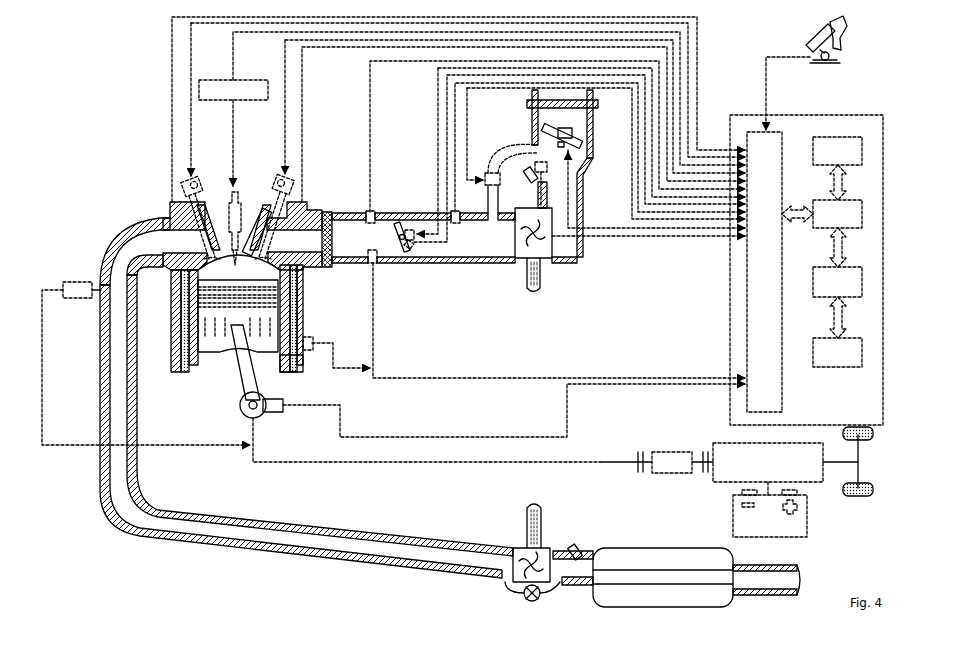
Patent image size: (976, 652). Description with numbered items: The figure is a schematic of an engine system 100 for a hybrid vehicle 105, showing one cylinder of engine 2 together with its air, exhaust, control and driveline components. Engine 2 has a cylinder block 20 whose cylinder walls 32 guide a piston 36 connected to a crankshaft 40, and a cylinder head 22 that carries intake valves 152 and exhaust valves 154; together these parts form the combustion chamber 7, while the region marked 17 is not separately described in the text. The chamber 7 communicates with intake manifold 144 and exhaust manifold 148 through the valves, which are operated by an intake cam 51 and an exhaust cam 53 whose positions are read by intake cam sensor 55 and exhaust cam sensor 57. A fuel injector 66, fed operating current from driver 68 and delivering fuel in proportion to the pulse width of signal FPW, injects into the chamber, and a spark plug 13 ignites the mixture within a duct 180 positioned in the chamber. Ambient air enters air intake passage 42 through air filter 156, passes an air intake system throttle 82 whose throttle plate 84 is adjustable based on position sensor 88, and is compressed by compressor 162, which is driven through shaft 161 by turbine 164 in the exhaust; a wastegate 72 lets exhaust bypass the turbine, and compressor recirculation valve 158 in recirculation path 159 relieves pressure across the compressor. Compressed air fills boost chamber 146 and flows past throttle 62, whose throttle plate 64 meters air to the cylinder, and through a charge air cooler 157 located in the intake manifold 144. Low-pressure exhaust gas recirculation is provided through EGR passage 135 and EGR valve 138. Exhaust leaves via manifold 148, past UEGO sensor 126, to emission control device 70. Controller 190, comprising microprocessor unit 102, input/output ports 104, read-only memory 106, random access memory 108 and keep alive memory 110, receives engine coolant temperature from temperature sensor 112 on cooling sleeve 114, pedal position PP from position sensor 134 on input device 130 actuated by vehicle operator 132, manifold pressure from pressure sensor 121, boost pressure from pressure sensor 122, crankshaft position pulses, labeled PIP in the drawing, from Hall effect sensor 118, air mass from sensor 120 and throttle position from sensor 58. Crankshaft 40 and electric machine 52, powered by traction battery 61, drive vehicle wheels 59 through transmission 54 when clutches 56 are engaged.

The engine system 100 is at (70, 54).
The engine 2 is at (120, 163).
The driver 68 is at (211, 80).
The exhaust cam sensor 57 is at (184, 190).
The exhaust cam 53 is at (197, 180).
The fuel injector 66 is at (238, 186).
The intake cam 51 is at (280, 178).
The intake cam sensor 55 is at (290, 188).
The duct 180 is at (270, 575).
The throttle plate 84 is at (302, 212).
The cylinder head 22 is at (320, 203).
The exhaust valves 154 is at (207, 253).
The spark plug 13 is at (240, 232).
The exhaust manifold 148 is at (161, 252).
The intake valves 152 is at (276, 258).
The pressure sensor 121 is at (372, 210).
The throttle 62 is at (401, 222).
The throttle plate 64 is at (412, 228).
The pressure sensor 122 is at (457, 211).
The compressor recirculation valve 158 is at (487, 172).
The air intake system throttle 82 is at (537, 142).
The position sensor 88 is at (537, 138).
The air intake passage 42 is at (571, 124).
The air filter 156 is at (598, 104).
The EGR valve 138 is at (535, 167).
The compressor recirculation path 159 is at (505, 212).
The EGR passage 135 is at (530, 182).
The intake manifold 144 is at (366, 250).
The intake boost chamber 146 is at (476, 250).
The UEGO sensor 126 is at (62, 284).
The cylinder block 20 is at (166, 305).
The combustion chamber 7 is at (188, 323).
The coolant sleeve 17 is at (180, 345).
The piston 36 is at (227, 337).
The cylinder walls 32 is at (200, 350).
The crankshaft 40 is at (243, 415).
The Hall effect sensor 118 is at (273, 413).
The temperature sensor 112 is at (311, 338).
The cooling sleeve 114 is at (300, 360).
The charge air cooler 157 is at (332, 267).
The air mass sensor 120 is at (375, 264).
The throttle position sensor 58 is at (410, 250).
The compressor 162 is at (547, 263).
The shaft 161 is at (544, 512).
The turbine 164 is at (516, 547).
The wastegate 72 is at (522, 596).
The emission control device 70 is at (590, 600).
The input device 130 is at (808, 44).
The vehicle operator 132 is at (846, 22).
The position sensor 134 is at (838, 62).
The input/output ports 104 is at (781, 136).
The controller 190 is at (883, 118).
The read-only memory 106 is at (862, 151).
The microprocessor unit 102 is at (862, 213).
The random access memory 108 is at (862, 282).
The keep alive memory 110 is at (862, 353).
The vehicle 105 is at (892, 455).
The clutches 56 is at (638, 455).
The electric machine 52 is at (672, 475).
The transmission 54 is at (806, 483).
The vehicle wheels 59 is at (865, 496).
The traction battery 61 is at (765, 538).
The pedal position signal PP is at (770, 100).
The fuel pulse width signal FPW is at (249, 34).
The profile ignition pickup signal PIP is at (300, 406).